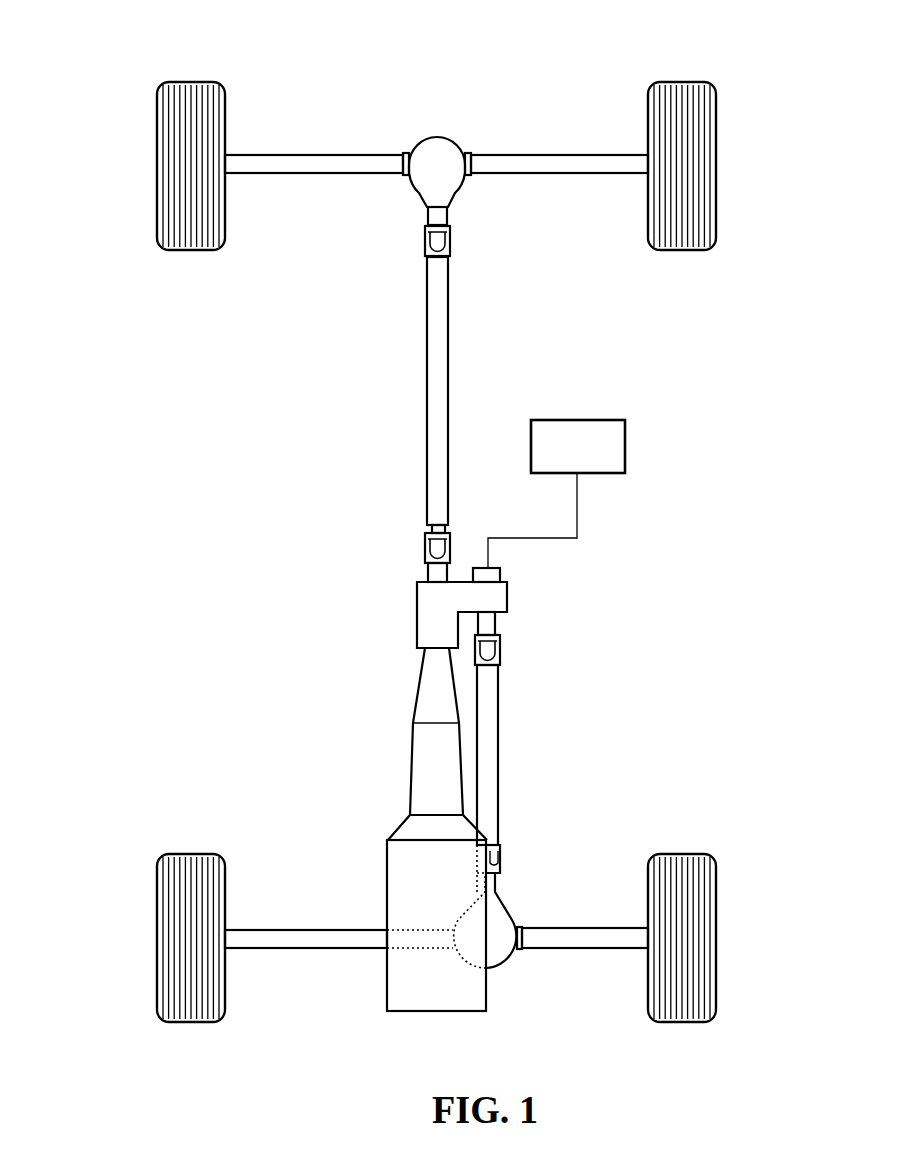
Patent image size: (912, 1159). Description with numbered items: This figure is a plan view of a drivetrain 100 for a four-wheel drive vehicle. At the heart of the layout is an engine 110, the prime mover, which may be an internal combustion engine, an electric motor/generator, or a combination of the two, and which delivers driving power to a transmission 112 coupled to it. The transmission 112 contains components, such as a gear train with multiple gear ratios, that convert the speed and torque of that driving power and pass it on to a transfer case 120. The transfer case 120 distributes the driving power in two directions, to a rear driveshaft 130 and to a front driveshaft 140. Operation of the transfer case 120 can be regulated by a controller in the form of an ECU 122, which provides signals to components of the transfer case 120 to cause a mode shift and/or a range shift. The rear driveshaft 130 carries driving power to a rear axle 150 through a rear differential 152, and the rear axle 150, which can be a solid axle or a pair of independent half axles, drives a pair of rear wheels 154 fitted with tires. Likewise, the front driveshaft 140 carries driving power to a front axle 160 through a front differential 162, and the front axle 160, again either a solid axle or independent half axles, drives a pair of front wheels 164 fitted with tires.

The drivetrain 100 is at (106, 97).
The engine 110 is at (397, 882).
The transmission 112 is at (417, 767).
The transfer case 120 is at (420, 616).
The ECU 122 is at (626, 448).
The rear driveshaft 130 is at (437, 395).
The front driveshaft 140 is at (492, 743).
The rear axle 150 is at (570, 160).
The rear differential 152 is at (443, 143).
The rear wheels 154 is at (225, 110).
The front axle 160 is at (596, 939).
The front differential 162 is at (503, 920).
The front wheels 164 is at (195, 854).